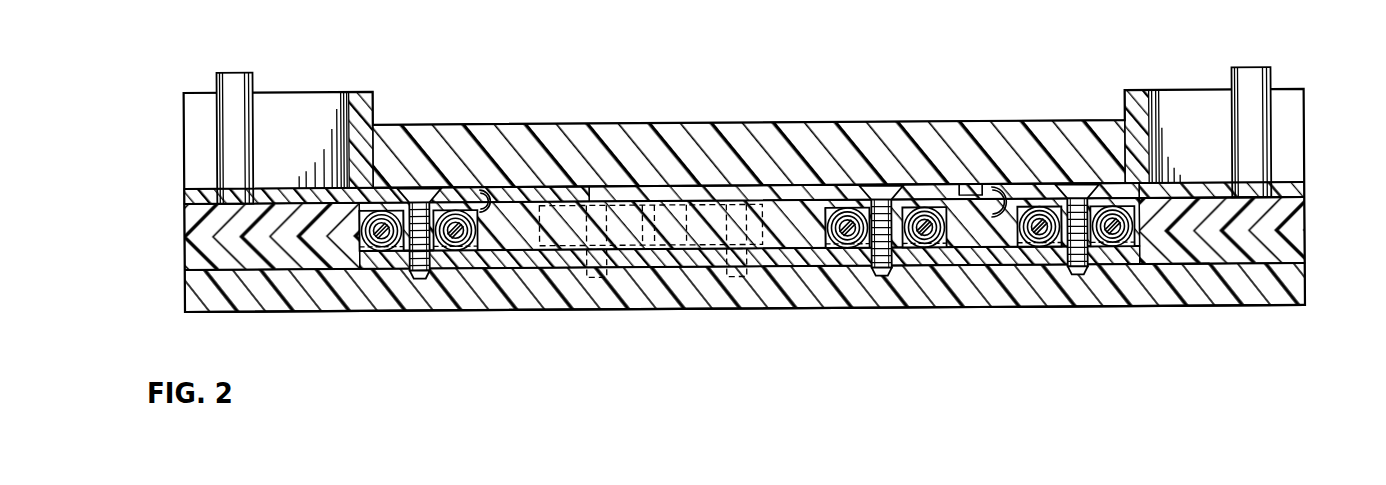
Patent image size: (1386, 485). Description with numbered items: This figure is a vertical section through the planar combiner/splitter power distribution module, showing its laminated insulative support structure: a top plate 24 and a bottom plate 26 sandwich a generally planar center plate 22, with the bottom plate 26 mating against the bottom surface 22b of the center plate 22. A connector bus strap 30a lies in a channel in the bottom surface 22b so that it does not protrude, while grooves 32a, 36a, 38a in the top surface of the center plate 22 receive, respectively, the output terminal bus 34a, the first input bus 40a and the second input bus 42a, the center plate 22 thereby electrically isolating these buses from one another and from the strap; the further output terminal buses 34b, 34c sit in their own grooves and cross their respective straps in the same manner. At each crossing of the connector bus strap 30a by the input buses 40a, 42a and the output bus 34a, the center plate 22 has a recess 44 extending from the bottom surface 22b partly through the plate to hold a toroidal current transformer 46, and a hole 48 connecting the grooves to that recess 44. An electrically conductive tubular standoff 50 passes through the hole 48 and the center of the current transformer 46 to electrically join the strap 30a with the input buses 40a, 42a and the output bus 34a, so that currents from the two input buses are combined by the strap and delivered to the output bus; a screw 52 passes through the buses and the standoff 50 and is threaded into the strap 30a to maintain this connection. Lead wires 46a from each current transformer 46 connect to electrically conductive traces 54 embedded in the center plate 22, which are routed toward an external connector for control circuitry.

The center plate 22 is at (1287, 242).
The bottom surface 22b is at (1188, 262).
The top plate 24 is at (1305, 128).
The bottom plate 26 is at (1305, 292).
The connector bus strap 30a is at (390, 258).
The groove 32a is at (848, 133).
The output terminal bus 34a is at (940, 135).
The output terminal bus 34b is at (703, 190).
The output terminal bus 34c is at (563, 195).
The groove 36a is at (288, 193).
The groove 38a is at (1305, 183).
The first input bus 40a is at (192, 199).
The second input bus 42a is at (1300, 195).
The recess 44 is at (363, 248).
The toroidal current transformer 46 is at (456, 252).
The electrical lead wires 46a is at (520, 230).
The hole 48 is at (1190, 200).
The tubular standoff 50 is at (1095, 265).
The screw 52 is at (885, 190).
The electrically conductive traces 54 is at (990, 200).